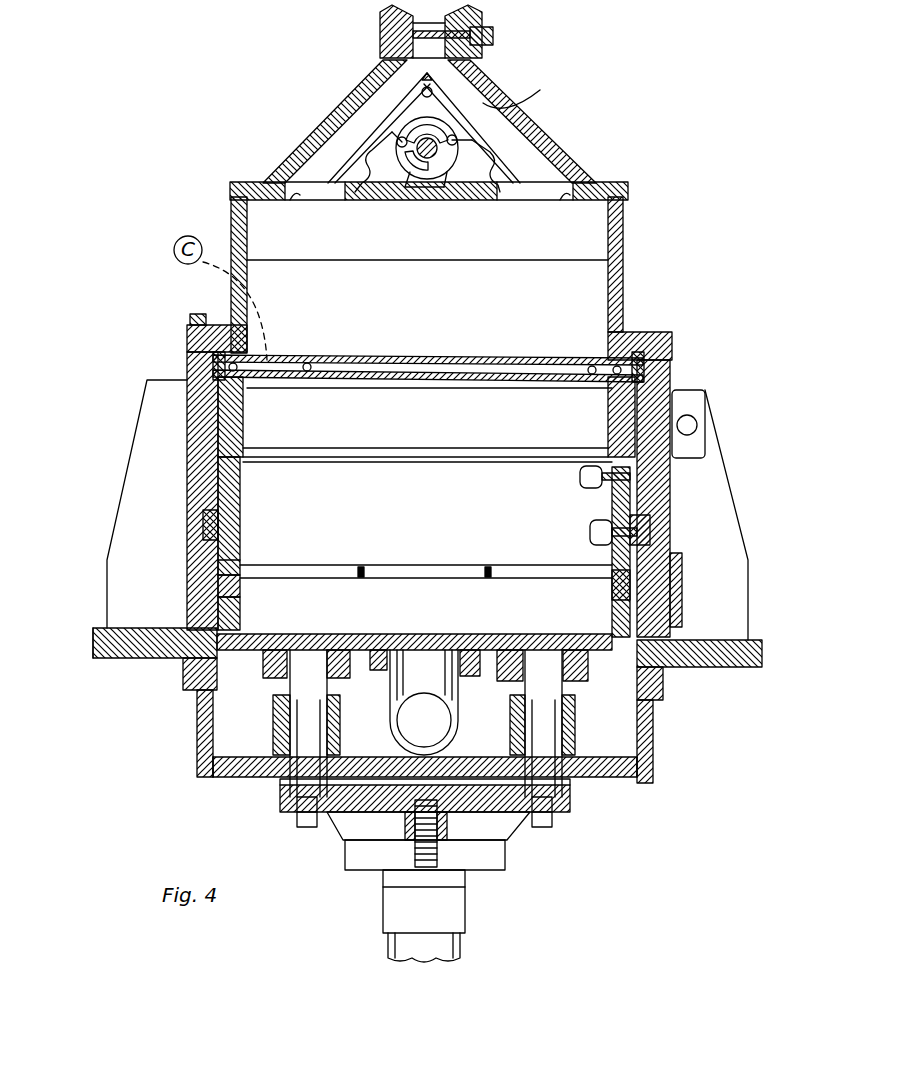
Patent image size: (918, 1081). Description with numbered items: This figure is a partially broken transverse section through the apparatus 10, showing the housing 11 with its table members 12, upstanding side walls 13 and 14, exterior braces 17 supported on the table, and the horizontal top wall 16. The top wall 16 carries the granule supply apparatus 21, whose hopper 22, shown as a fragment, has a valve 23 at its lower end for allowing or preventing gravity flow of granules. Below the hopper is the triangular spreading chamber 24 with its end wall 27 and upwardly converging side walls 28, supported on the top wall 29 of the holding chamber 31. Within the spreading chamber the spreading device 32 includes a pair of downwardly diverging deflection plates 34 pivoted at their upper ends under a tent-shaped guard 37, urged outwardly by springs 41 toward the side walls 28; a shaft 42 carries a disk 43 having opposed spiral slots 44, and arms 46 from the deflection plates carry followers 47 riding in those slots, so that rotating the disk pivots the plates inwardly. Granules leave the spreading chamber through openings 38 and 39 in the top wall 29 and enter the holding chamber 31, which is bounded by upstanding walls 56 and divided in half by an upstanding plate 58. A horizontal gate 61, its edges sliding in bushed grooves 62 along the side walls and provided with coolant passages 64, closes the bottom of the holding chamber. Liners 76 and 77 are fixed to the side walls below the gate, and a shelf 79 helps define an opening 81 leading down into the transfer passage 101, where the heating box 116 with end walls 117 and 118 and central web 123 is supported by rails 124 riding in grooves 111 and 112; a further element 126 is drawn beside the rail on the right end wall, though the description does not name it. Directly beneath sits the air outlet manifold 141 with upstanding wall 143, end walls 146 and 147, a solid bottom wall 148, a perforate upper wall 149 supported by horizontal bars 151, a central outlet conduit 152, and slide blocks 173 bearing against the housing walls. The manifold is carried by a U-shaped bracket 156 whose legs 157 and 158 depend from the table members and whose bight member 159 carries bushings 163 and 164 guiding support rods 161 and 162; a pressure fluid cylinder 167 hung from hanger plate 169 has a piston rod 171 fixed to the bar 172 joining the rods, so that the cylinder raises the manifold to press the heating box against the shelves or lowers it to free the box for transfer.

The apparatus 10 is at (728, 918).
The housing 11 is at (160, 313).
The table members 12 is at (735, 660).
The side wall 13 is at (680, 395).
The side wall 14 is at (185, 478).
The top wall 16 is at (660, 335).
The exterior braces 17 is at (732, 520).
The granule supply apparatus 21 is at (640, 218).
The hopper 22 is at (383, 42).
The valve 23 is at (495, 36).
The spreading chamber 24 is at (540, 92).
The end wall 27 is at (465, 85).
The side walls 28 is at (532, 130).
The top wall 29 is at (625, 185).
The holding chamber 31 is at (612, 288).
The spreading device 32 is at (378, 112).
The deflection plates 34 is at (400, 103).
The guard 37 is at (420, 86).
The opening 38 is at (290, 200).
The opening 39 is at (560, 200).
The springs 41 is at (495, 165).
The shaft 42 is at (440, 152).
The disk 43 is at (450, 200).
The spiral slots 44 is at (410, 200).
The arms 46 is at (388, 133).
The followers 47 is at (400, 148).
The upstanding walls 56 is at (618, 253).
The upstanding plate 58 is at (429, 336).
The gate 61 is at (520, 370).
The grooves 62 is at (200, 340).
The coolant passages 64 is at (312, 357).
The liner 76 is at (608, 420).
The liner 77 is at (243, 420).
The shelf 79 is at (415, 460).
The opening 81 is at (255, 448).
The transfer passage 101 is at (218, 562).
The groove 111 is at (632, 505).
The groove 112 is at (203, 522).
The heating box 116 is at (455, 458).
The end wall 117 is at (608, 490).
The end wall 118 is at (242, 492).
The central web 123 is at (426, 541).
The rail 124 is at (597, 536).
The sealing ring 126 is at (650, 530).
The air outlet manifold 141 is at (200, 619).
The upstanding wall 143 is at (556, 591).
The end wall 146 is at (637, 610).
The end wall 147 is at (240, 612).
The bottom wall 148 is at (530, 646).
The perforate upper wall 149 is at (462, 563).
The horizontal bars 151 is at (360, 580).
The outlet conduit 152 is at (413, 680).
The U-shaped bracket 156 is at (172, 781).
The leg 157 is at (653, 740).
The leg 158 is at (197, 728).
The bight member 159 is at (615, 785).
The support rod 161 is at (565, 708).
The support rod 162 is at (290, 712).
The bushing 163 is at (510, 724).
The bushing 164 is at (340, 724).
The pressure fluid cylinder 167 is at (450, 918).
The hanger plate 169 is at (360, 855).
The piston rod 171 is at (437, 852).
The bar 172 is at (570, 805).
The slide block 173 is at (240, 590).